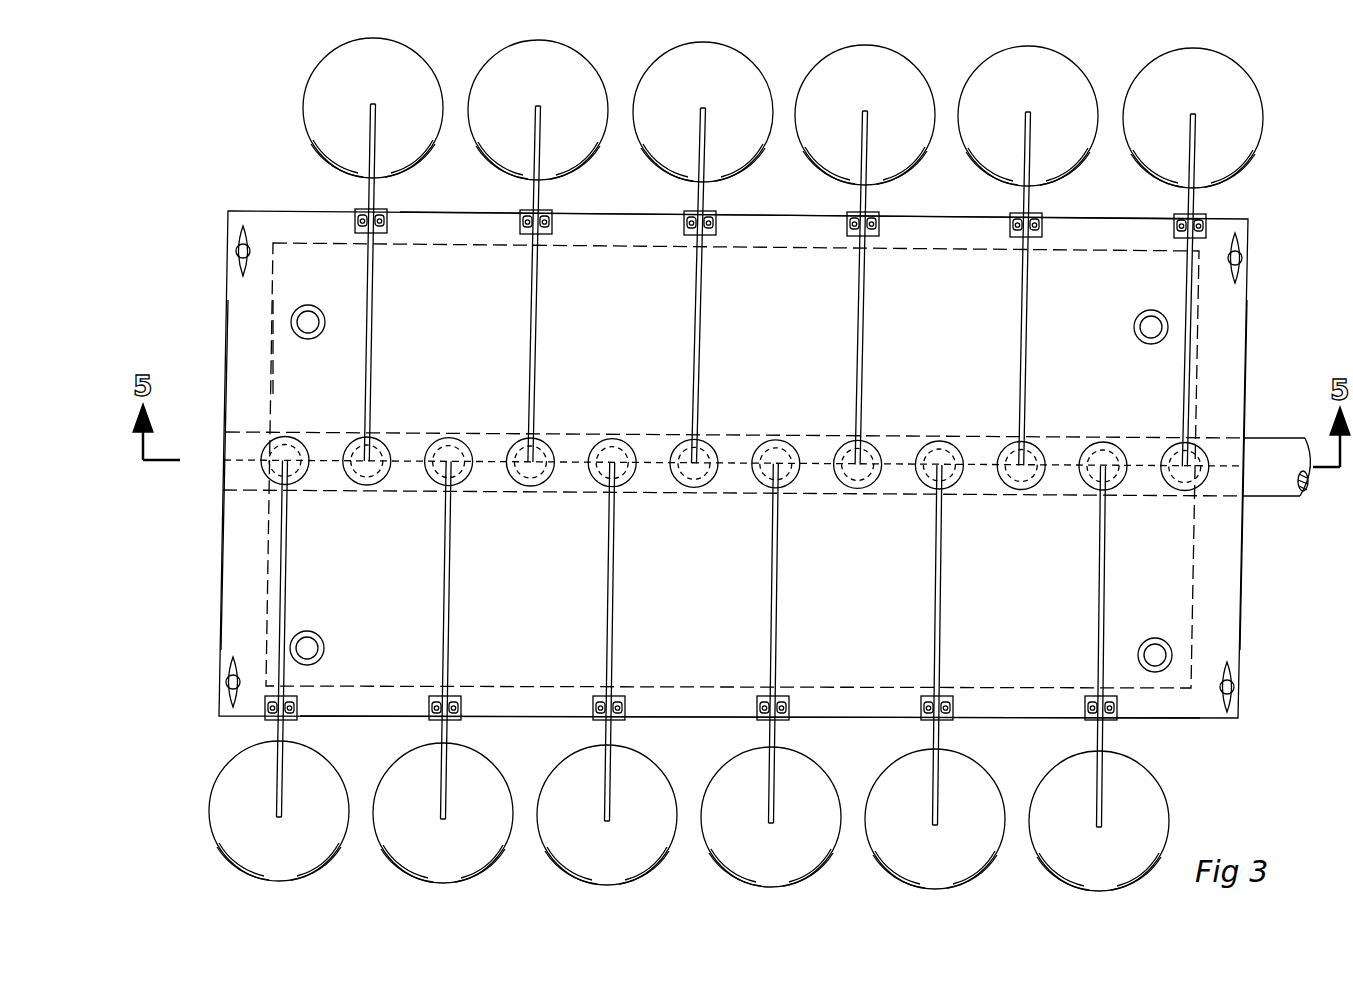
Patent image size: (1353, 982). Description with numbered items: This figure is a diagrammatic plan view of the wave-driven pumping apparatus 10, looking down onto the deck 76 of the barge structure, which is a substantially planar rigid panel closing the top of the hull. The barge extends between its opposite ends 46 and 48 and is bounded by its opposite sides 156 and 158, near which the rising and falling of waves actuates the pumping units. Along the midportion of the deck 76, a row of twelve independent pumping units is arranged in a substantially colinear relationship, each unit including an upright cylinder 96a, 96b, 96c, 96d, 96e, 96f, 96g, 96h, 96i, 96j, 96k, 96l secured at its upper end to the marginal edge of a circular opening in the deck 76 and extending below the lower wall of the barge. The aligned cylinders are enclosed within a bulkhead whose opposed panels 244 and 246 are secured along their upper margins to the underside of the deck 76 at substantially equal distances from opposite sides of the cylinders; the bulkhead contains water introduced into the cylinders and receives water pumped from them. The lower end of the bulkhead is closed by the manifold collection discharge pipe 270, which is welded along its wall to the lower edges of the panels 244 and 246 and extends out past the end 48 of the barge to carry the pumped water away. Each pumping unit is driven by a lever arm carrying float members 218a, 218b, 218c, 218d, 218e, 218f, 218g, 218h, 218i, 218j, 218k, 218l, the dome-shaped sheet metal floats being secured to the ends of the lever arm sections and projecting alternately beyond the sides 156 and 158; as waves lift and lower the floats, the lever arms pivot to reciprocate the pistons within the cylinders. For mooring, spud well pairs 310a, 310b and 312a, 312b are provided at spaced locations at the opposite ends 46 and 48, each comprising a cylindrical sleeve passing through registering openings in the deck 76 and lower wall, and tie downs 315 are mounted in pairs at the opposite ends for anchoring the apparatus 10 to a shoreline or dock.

The pumping apparatus 10 is at (934, 372).
The end of barge structure 46 is at (240, 578).
The end of barge structure 48 is at (1232, 562).
The deck 76 is at (300, 395).
The cylinder 96a is at (292, 478).
The cylinder 96b is at (374, 479).
The cylinder 96c is at (456, 479).
The cylinder 96d is at (538, 480).
The cylinder 96e is at (620, 481).
The cylinder 96f is at (702, 481).
The cylinder 96g is at (784, 482).
The cylinder 96h is at (865, 482).
The cylinder 96i is at (947, 483).
The cylinder 96j is at (1029, 483).
The cylinder 96k is at (1109, 485).
The cylinder 96l is at (1180, 488).
The side of barge structure 156 is at (730, 232).
The side of barge structure 158 is at (815, 710).
The float member 218a is at (243, 860).
The float member 218b is at (330, 67).
The float member 218c is at (410, 862).
The float member 218d is at (508, 70).
The float member 218e is at (570, 862).
The float member 218f is at (672, 74).
The float member 218g is at (735, 862).
The float member 218h is at (826, 71).
The float member 218i is at (895, 862).
The float member 218j is at (990, 73).
The float member 218k is at (1060, 862).
The float member 218l is at (1158, 80).
The bulkhead panel 244 is at (893, 436).
The bulkhead panel 246 is at (683, 497).
The manifold collection discharge pipe 270 is at (1287, 471).
The spud well 310a is at (316, 338).
The spud well 310b is at (318, 634).
The spud well 312a is at (1140, 340).
The spud well 312b is at (1144, 638).
The tie downs 315 is at (238, 252).